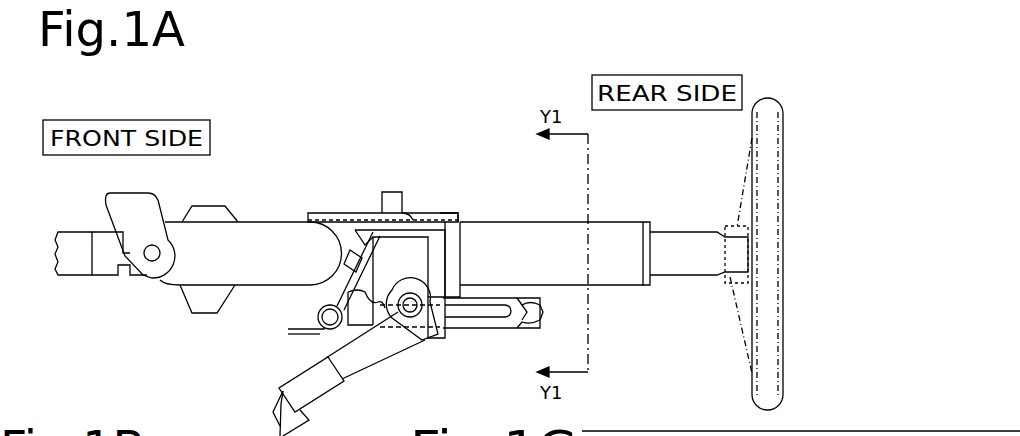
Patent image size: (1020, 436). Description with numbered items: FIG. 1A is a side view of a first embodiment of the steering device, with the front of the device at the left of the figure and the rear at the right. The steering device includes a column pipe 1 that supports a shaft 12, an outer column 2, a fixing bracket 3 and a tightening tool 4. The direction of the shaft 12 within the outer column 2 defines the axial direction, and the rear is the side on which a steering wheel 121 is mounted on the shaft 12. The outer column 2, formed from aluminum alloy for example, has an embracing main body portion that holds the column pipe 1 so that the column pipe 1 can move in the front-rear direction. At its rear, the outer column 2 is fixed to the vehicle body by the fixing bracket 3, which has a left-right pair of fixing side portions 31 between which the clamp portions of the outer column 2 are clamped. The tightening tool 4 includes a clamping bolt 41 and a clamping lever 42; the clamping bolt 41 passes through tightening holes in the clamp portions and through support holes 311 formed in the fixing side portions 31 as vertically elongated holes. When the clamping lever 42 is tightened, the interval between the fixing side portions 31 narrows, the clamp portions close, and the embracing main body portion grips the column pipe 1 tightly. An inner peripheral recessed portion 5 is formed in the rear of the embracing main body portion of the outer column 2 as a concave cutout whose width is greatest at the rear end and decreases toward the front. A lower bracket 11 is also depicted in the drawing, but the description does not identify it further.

The column pipe 1 is at (610, 218).
The shaft 12 is at (678, 220).
The steering wheel 121 is at (752, 401).
The outer column 2 is at (347, 209).
The fixing bracket 3 is at (422, 250).
The fixing side portions 31 is at (433, 270).
The support holes 311 is at (432, 337).
The inner peripheral recessed portion 5 is at (453, 213).
The lower bracket 11 is at (503, 332).
The tightening tool 4 is at (300, 372).
The clamping bolt 41 is at (427, 353).
The clamping lever 42 is at (272, 416).